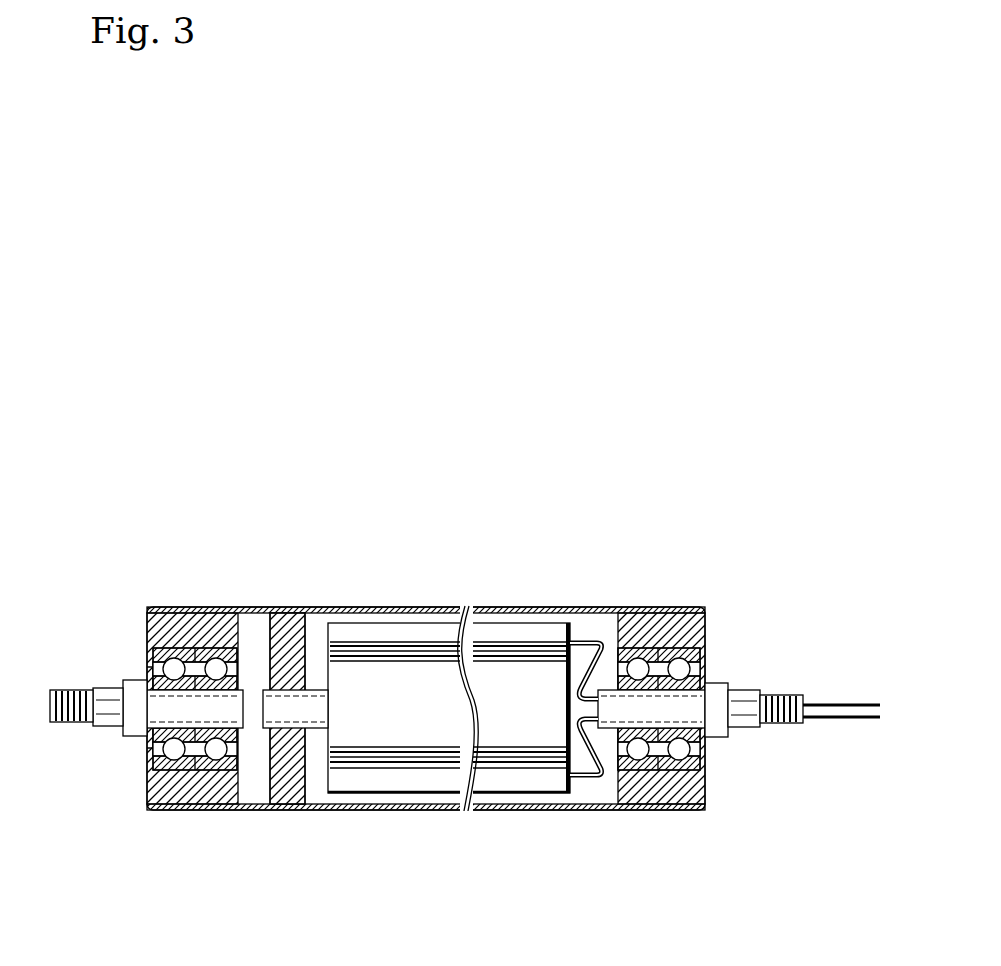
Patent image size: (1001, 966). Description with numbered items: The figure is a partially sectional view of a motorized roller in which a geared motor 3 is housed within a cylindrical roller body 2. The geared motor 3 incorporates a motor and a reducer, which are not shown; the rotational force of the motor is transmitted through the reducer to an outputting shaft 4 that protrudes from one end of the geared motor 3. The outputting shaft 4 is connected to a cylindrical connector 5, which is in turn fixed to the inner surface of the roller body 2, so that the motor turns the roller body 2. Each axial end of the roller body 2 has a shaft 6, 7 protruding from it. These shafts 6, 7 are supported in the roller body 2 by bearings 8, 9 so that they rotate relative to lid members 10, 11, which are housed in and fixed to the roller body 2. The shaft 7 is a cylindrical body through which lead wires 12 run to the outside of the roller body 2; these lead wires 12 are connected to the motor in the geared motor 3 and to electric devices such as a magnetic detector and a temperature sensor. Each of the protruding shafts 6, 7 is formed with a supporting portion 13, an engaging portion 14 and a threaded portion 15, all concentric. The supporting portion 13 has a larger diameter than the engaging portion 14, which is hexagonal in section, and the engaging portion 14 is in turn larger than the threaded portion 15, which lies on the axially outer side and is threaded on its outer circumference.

The roller body 2 is at (421, 607).
The geared motor 3 is at (418, 780).
The outputting shaft 4 is at (313, 700).
The cylindrical connector 5 is at (288, 795).
The shaft 6 is at (108, 689).
The shaft 7 is at (747, 690).
The bearing 8 is at (227, 763).
The bearing 9 is at (688, 658).
The lid member 10 is at (167, 808).
The lid member 11 is at (672, 808).
The lead wires 12 is at (583, 641).
The supporting portion 13 is at (128, 737).
The engaging portion 14 is at (97, 727).
The threaded portion 15 is at (57, 723).